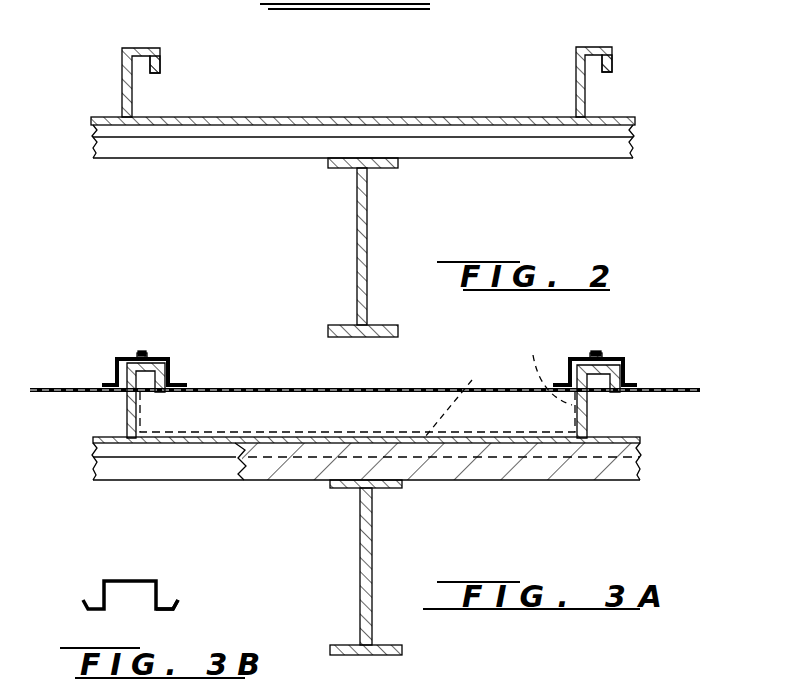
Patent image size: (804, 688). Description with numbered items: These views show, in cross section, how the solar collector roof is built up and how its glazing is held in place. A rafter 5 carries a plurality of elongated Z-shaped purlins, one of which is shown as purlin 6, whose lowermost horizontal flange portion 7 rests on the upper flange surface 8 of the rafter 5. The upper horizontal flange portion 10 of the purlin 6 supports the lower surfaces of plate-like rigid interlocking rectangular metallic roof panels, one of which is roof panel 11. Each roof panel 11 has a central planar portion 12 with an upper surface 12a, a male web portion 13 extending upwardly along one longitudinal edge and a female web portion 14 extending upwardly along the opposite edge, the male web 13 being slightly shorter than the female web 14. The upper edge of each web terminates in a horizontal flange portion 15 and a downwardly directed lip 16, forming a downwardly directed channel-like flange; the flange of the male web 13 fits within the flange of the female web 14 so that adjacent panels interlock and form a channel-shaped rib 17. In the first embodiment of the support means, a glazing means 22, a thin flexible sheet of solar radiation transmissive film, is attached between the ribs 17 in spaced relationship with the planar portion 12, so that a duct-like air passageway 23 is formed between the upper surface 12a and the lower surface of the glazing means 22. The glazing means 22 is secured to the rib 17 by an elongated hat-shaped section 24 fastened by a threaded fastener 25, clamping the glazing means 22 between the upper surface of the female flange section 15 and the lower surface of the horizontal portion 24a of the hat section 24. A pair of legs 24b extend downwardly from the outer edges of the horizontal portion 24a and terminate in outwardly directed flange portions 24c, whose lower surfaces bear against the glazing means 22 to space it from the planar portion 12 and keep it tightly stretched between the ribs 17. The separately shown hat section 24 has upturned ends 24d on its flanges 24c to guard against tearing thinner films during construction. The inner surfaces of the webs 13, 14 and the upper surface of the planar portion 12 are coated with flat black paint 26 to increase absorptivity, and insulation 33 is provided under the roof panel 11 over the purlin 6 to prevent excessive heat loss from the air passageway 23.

In FIG. 2, the rafter 5 is at (344, 247).
In FIG. 3A, the rafter 5 is at (347, 567).
In FIG. 2, the Z-shaped purlin 6 is at (363, 169).
In FIG. 3A, the Z-shaped purlin 6 is at (366, 484).
In FIG. 2, the lowermost horizontal flange portion 7 is at (363, 163).
In FIG. 3A, the lowermost horizontal flange portion 7 is at (366, 477).
In FIG. 2, the upper flange surface 8 is at (328, 168).
In FIG. 3A, the upper flange surface 8 is at (330, 484).
In FIG. 2, the upper horizontal flange portion 10 is at (168, 126).
In FIG. 2, the roof panel 11 is at (314, 117).
In FIG. 3A, the roof panel 11 is at (215, 437).
In FIG. 2, the central planar portion 12 is at (395, 117).
In FIG. 3A, the central planar portion 12 is at (388, 437).
In FIG. 3A, the upper surface 12a is at (470, 437).
In FIG. 2, the male web portion 13 is at (150, 98).
In FIG. 3A, the male web portion 13 is at (137, 432).
In FIG. 2, the female web portion 14 is at (575, 96).
In FIG. 3A, the female web portion 14 is at (577, 405).
In FIG. 2, the horizontal flange portion 15 is at (391, 58).
In FIG. 3A, the horizontal flange portion 15 is at (373, 378).
In FIG. 2, the downwardly directed lip 16 is at (162, 63).
In FIG. 2, the channel-shaped rib 17 is at (356, 58).
In FIG. 3A, the channel-shaped rib 17 is at (343, 384).
In FIG. 3A, the glazing means 22 is at (268, 388).
In FIG. 3A, the air passageway 23 is at (344, 424).
In FIG. 3A, the hat-shaped section 24 is at (354, 341).
In FIG. 3B, the hat-shaped section 24 is at (173, 581).
In FIG. 3A, the horizontal portion 24a is at (160, 357).
In FIG. 3A, the legs 24b is at (190, 382).
In FIG. 3A, the outwardly directed flange portions 24c is at (190, 388).
In FIG. 3B, the upturned ends 24d is at (178, 608).
In FIG. 3A, the threaded fastener 25 is at (141, 352).
In FIG. 3A, the flat black paint 26 is at (498, 383).
In FIG. 3A, the insulation 33 is at (555, 476).